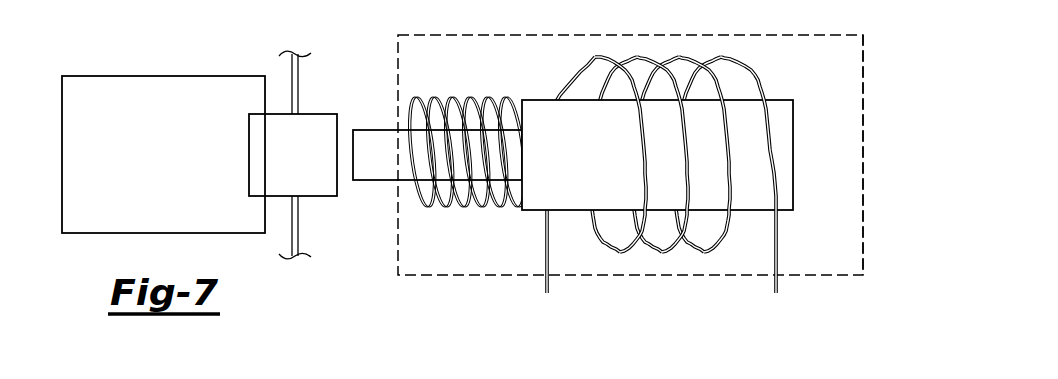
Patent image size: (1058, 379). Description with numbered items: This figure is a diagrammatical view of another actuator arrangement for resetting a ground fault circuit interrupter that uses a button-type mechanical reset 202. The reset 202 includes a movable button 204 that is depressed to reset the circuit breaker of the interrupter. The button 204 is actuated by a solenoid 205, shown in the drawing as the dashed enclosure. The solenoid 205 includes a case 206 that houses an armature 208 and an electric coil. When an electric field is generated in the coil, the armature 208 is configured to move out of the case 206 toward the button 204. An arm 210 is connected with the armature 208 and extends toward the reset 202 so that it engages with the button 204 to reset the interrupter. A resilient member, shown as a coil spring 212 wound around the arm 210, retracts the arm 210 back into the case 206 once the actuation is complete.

The button-type mechanical reset 202 is at (133, 86).
The movable button 204 is at (272, 160).
The solenoid 205 is at (848, 243).
The case 206 is at (865, 150).
The armature 208 is at (542, 110).
The arm 210 is at (370, 138).
The coil spring 212 is at (442, 208).